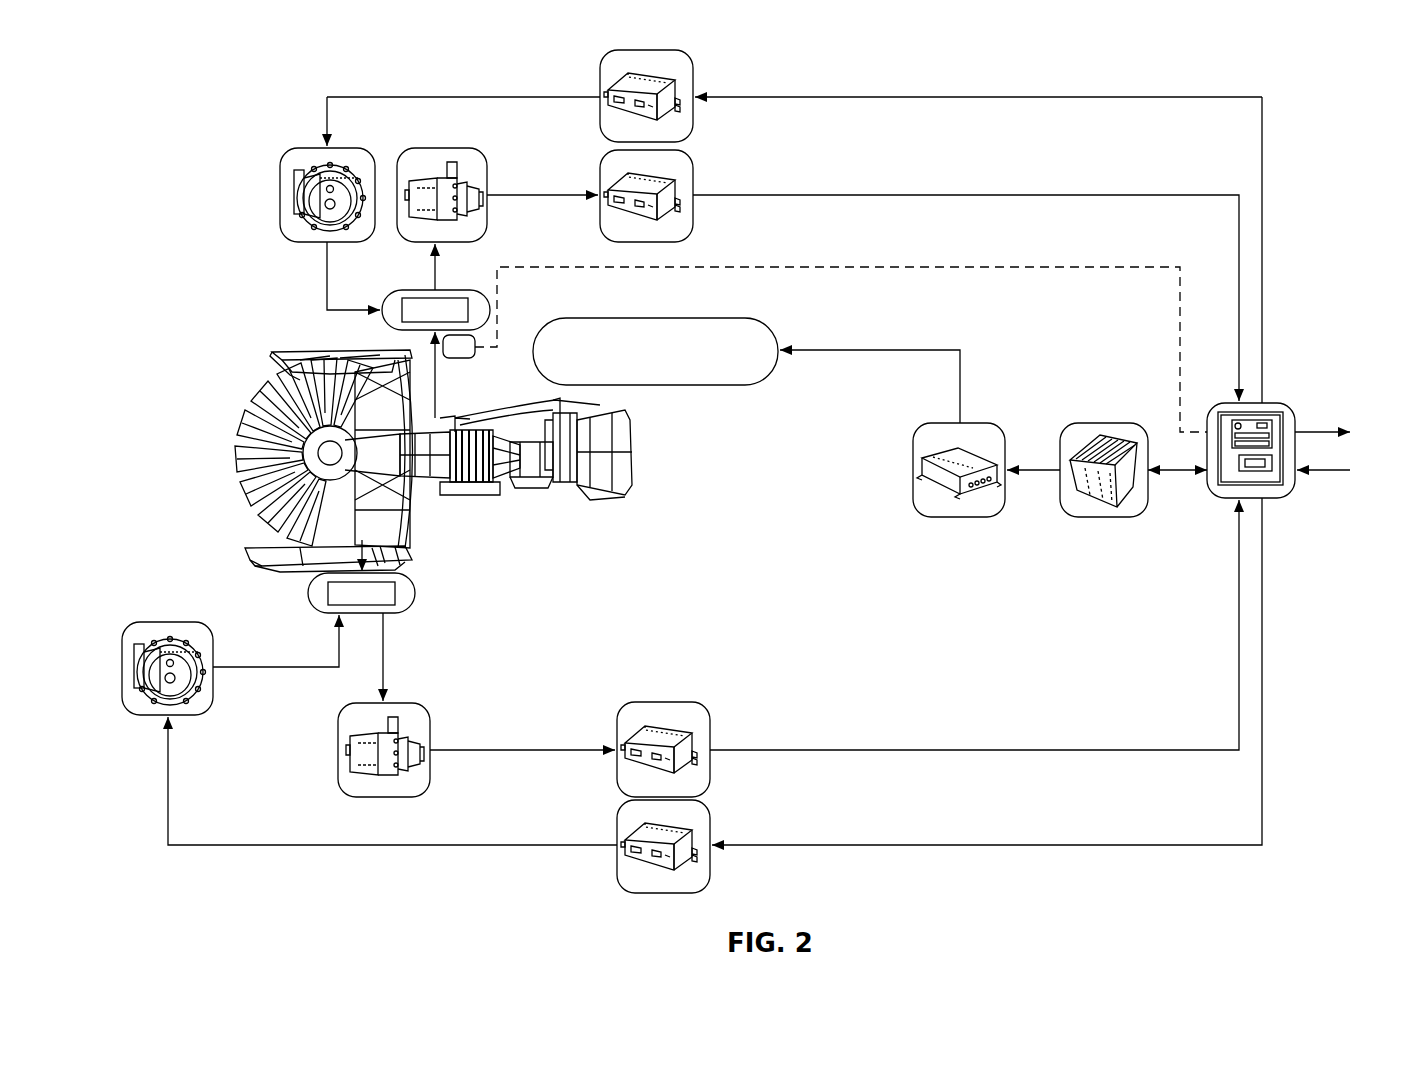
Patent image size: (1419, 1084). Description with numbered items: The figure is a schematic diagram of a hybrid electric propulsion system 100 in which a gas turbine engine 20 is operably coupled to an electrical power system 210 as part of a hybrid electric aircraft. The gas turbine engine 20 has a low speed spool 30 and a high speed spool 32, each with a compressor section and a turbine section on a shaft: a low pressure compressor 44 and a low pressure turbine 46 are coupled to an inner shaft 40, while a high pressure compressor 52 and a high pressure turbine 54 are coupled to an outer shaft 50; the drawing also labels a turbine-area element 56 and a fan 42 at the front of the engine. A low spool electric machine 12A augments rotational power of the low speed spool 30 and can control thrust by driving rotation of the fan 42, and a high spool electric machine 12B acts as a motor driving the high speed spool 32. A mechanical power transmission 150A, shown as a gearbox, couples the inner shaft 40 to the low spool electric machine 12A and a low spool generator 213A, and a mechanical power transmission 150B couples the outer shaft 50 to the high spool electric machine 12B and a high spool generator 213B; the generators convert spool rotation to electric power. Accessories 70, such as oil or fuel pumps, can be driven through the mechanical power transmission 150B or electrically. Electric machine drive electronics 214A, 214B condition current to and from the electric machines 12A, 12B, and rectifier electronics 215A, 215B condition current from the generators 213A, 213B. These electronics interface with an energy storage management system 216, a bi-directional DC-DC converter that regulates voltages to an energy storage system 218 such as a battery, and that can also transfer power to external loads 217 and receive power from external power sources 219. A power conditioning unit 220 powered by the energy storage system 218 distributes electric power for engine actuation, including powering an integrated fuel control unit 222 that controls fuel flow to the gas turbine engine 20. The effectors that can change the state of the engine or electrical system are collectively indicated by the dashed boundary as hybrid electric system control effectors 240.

The hybrid electric propulsion system 100 is at (110, 118).
The gas turbine engine 20 is at (410, 445).
The low speed spool 30 is at (317, 372).
The inner shaft 40 is at (327, 437).
The fan 42 is at (305, 520).
The low pressure compressor 44 is at (428, 510).
The outer shaft 50 is at (443, 435).
The high pressure compressor 52 is at (478, 480).
The turbine section 56 is at (515, 473).
The low pressure turbine 46 is at (563, 473).
The high pressure turbine 54 is at (600, 487).
The high speed spool 32 is at (522, 458).
The accessories 70 is at (474, 357).
The low spool electric machine 12A is at (122, 668).
The high spool electric machine 12B is at (280, 197).
The mechanical power transmission 150A is at (416, 593).
The mechanical power transmission 150B is at (420, 290).
The electrical power system 210 is at (478, 262).
The low spool generator 213A is at (338, 752).
The high spool generator 213B is at (484, 156).
The electric machine drive electronics 214A is at (708, 802).
The electric machine drive electronics 214B is at (600, 85).
The rectifier electronics 215A is at (708, 706).
The rectifier electronics 215B is at (693, 178).
The energy storage management system 216 is at (1290, 495).
The external loads 217 is at (1327, 430).
The energy storage system 218 is at (1103, 518).
The external power sources 219 is at (1332, 470).
The power conditioning unit 220 is at (958, 520).
The integrated fuel control unit 222 is at (727, 387).
The hybrid electric system control effectors 240 is at (1002, 237).